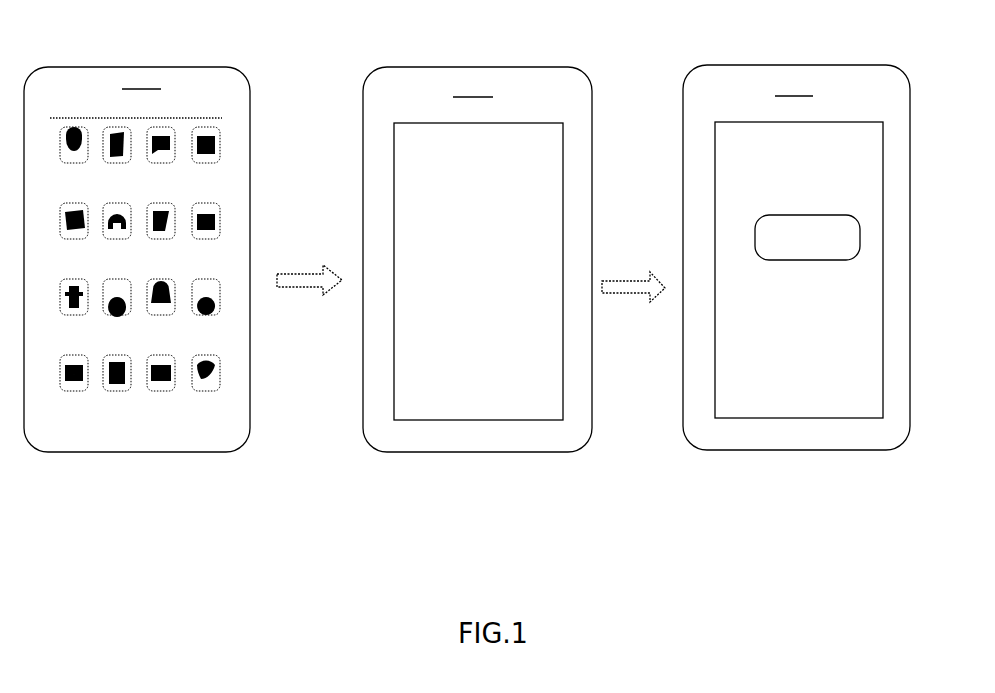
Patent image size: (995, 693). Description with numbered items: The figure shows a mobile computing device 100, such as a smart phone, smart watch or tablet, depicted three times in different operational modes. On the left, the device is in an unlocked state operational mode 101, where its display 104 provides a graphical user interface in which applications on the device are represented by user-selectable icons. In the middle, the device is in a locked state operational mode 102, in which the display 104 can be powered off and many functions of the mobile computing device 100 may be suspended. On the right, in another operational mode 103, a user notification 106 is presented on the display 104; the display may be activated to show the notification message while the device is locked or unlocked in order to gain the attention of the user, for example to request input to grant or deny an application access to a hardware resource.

The mobile computing device 100 is at (153, 67).
The unlocked state operational mode 101 is at (139, 513).
The locked state operational mode 102 is at (478, 508).
The operational mode with notification 103 is at (798, 508).
The display 104 is at (195, 280).
The user notification 106 is at (797, 215).